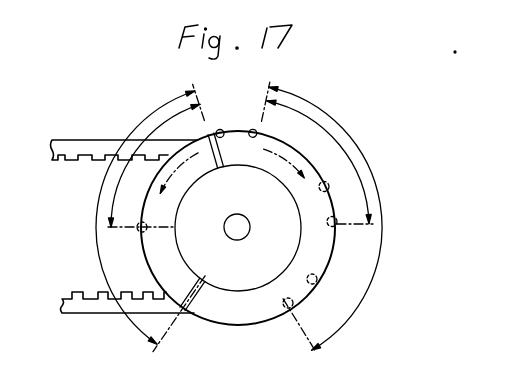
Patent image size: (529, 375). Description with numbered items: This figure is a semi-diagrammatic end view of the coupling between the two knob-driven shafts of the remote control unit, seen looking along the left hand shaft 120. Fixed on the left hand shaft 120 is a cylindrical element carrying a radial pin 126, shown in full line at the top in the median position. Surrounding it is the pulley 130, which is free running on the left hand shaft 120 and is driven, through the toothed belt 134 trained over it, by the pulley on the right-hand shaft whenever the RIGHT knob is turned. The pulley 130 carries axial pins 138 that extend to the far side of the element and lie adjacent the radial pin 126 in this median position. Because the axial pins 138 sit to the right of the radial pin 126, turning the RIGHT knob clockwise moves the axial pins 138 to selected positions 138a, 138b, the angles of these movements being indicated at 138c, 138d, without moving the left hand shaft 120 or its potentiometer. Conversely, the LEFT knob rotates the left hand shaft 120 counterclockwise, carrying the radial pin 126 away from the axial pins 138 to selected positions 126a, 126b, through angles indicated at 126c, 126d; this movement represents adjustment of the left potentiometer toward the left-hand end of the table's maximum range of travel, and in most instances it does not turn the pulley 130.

The left hand shaft 120 is at (241, 239).
The radial pin 126 is at (200, 135).
The selected position of the radial pin 126a is at (160, 233).
The selected position of the radial pin 126b is at (201, 294).
The angle of movement of the radial pin 126c is at (117, 192).
The angle of movement of the radial pin 126d is at (135, 329).
The pulley 130 is at (334, 120).
The belt 134 is at (77, 314).
The axial pins 138 is at (253, 128).
The selected position of the axial pins 138a is at (330, 184).
The selected position of the axial pins 138b is at (292, 306).
The angle of movement of the axial pins 138c is at (350, 157).
The angle of movement of the axial pins 138d is at (379, 262).